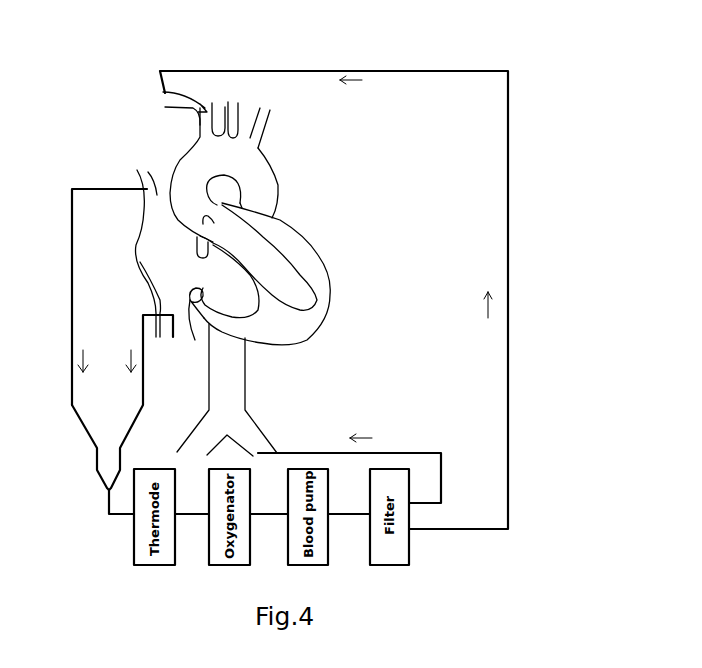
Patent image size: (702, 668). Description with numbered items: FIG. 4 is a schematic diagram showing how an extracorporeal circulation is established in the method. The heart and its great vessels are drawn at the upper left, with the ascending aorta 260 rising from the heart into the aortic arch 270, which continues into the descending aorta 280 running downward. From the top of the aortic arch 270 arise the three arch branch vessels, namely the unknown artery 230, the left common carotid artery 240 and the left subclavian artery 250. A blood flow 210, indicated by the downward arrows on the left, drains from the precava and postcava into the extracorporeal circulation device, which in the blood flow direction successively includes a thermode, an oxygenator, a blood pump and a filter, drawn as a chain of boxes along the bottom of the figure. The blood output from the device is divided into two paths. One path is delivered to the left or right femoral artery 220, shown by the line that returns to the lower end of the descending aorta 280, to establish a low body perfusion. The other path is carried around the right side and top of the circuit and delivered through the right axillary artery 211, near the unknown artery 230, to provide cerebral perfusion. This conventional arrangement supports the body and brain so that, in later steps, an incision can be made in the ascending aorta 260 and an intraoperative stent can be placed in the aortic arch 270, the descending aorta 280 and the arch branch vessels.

The blood flow 210 is at (105, 495).
The right axillary artery 211 is at (165, 93).
The femoral artery 220 is at (245, 435).
The unknown artery 230 is at (211, 100).
The left common carotid artery 240 is at (235, 100).
The left subclavian artery 250 is at (270, 110).
The ascending aorta 260 is at (188, 182).
The aortic arch 270 is at (228, 163).
The descending aorta 280 is at (263, 208).